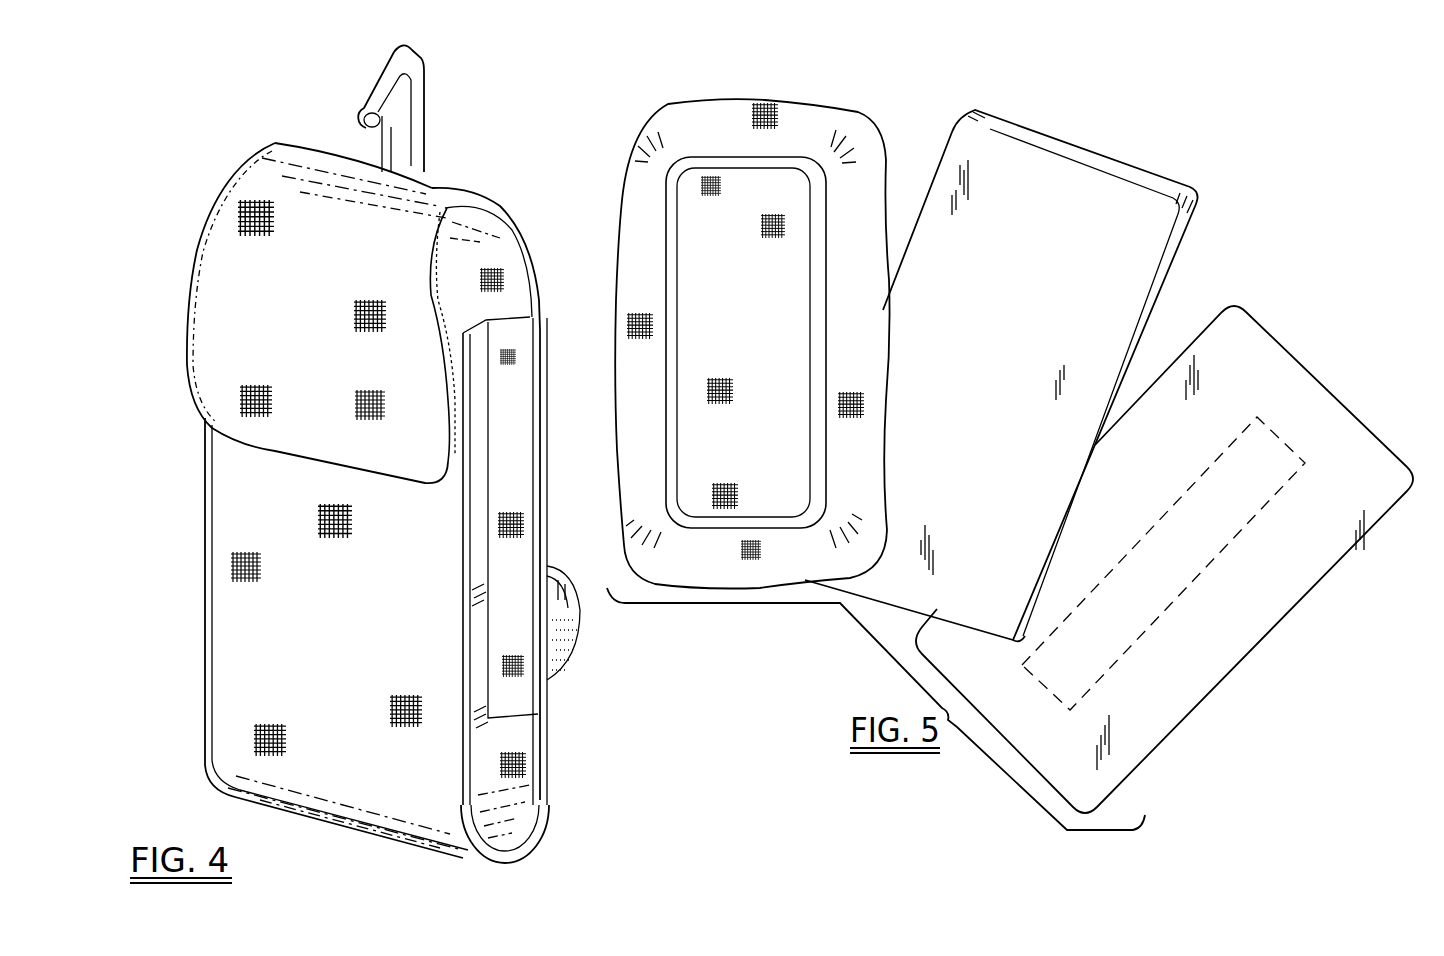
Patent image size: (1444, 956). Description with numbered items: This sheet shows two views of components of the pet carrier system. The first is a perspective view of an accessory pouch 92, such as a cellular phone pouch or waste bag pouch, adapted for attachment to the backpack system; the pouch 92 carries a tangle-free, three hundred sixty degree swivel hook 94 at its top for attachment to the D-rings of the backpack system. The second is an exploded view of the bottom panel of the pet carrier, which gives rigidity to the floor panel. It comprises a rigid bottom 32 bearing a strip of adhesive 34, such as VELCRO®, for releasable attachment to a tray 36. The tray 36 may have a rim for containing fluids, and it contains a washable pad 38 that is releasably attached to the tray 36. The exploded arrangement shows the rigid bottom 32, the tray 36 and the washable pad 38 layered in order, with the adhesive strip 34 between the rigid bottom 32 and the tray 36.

In FIG. 4, the swivel hook 94 is at (374, 90).
In FIG. 4, the accessory pouch 92 is at (510, 692).
In FIG. 5, the washable pad 38 is at (723, 110).
In FIG. 5, the tray 36 is at (1017, 153).
In FIG. 5, the strip of adhesive 34 is at (1132, 613).
In FIG. 5, the rigid bottom 32 is at (1130, 765).